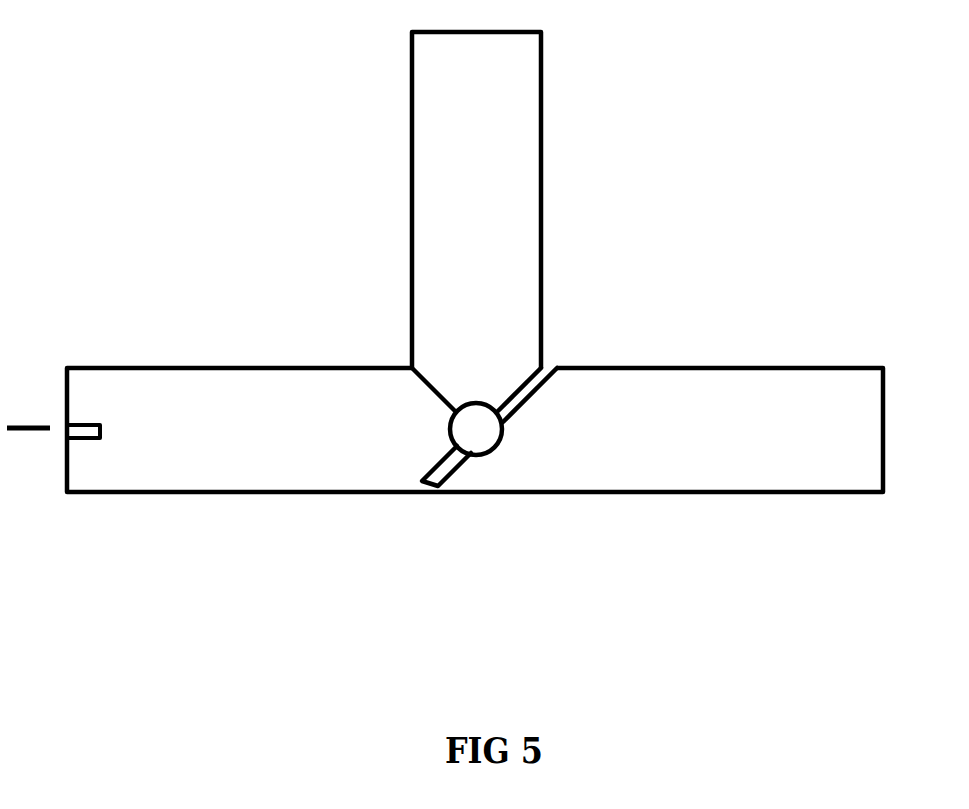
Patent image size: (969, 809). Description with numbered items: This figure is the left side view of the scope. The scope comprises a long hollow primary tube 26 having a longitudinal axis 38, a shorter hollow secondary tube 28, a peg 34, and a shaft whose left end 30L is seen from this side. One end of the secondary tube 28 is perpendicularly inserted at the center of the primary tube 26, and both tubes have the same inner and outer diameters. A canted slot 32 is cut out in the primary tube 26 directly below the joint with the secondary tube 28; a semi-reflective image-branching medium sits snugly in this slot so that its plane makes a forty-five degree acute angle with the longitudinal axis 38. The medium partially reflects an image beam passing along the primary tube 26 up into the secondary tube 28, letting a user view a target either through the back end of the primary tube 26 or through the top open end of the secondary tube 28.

The primary tube 26 is at (755, 467).
The secondary tube 28 is at (427, 146).
The left end of shaft 30L is at (470, 425).
The canted slot 32 is at (537, 385).
The peg 34 is at (80, 438).
The longitudinal axis 38 is at (31, 425).